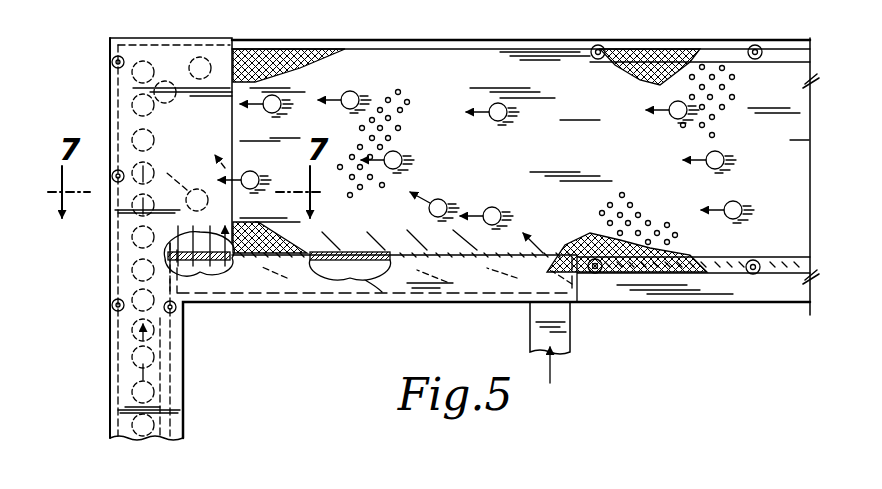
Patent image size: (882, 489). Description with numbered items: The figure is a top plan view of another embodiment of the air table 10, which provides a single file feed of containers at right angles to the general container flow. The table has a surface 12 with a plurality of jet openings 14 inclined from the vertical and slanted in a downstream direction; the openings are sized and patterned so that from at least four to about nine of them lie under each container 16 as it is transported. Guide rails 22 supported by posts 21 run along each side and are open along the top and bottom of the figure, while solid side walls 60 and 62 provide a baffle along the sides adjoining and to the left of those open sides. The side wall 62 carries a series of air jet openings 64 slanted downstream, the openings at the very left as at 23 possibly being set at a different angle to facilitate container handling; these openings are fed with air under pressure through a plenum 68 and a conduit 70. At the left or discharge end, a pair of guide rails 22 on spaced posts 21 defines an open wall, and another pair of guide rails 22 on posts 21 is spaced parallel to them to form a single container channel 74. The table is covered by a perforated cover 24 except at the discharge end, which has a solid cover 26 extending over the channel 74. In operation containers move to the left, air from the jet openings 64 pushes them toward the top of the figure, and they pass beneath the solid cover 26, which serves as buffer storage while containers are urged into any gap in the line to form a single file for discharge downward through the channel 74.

The air table 10 is at (702, 40).
The surface 12 is at (797, 140).
The jet openings 14 is at (402, 112).
The container 16 is at (738, 201).
The posts 21 is at (112, 63).
The guide rails 22 is at (108, 262).
The air jet openings 23 is at (214, 268).
The perforated cover 24 is at (318, 56).
The solid cover 26 is at (172, 53).
The solid side wall 60 is at (383, 47).
The side wall 62 is at (355, 252).
The air jet openings 64 is at (360, 254).
The plenum 68 is at (402, 283).
The conduit 70 is at (532, 333).
The single container channel 74 is at (118, 410).